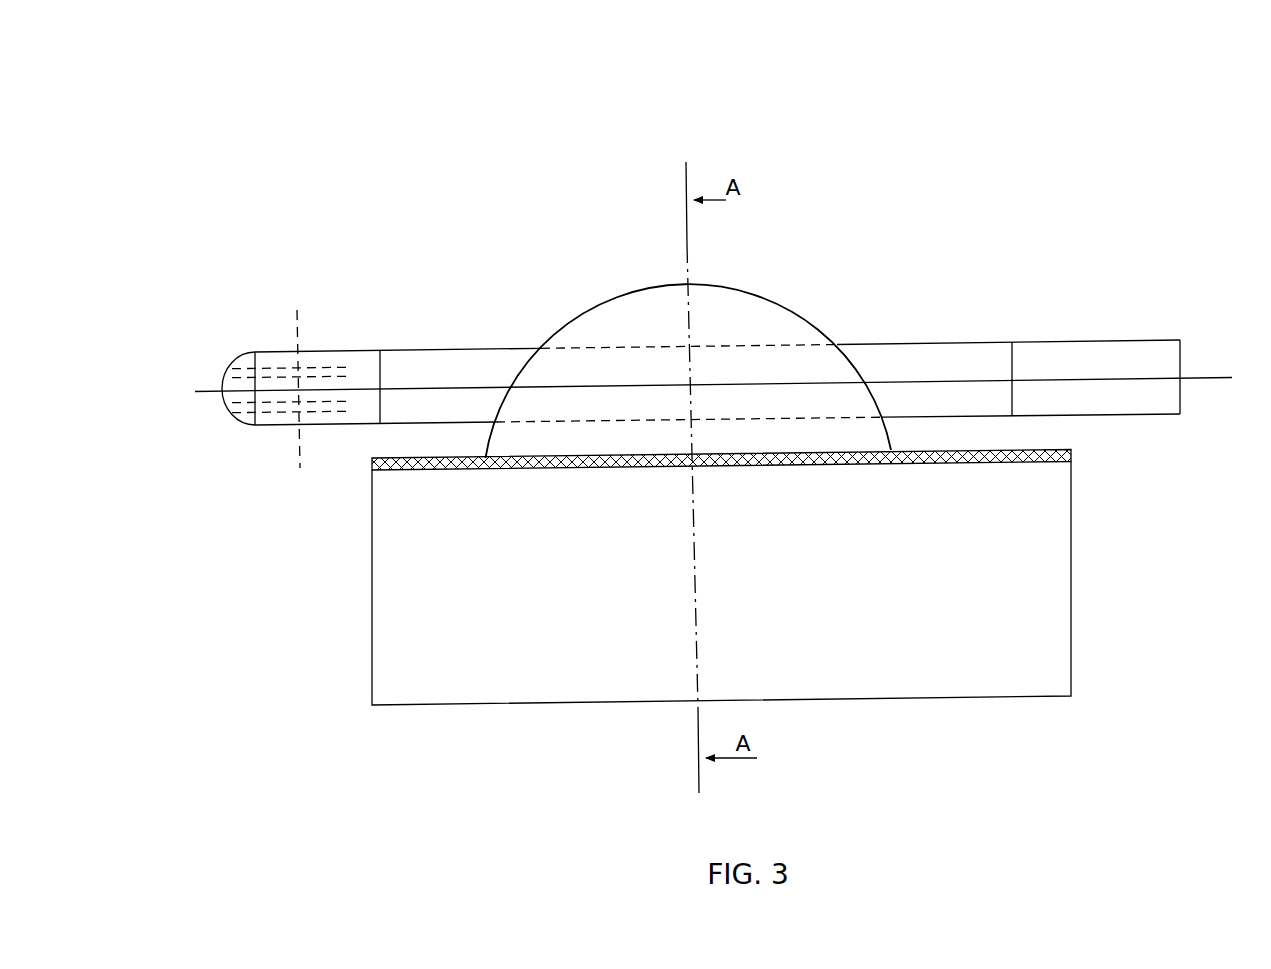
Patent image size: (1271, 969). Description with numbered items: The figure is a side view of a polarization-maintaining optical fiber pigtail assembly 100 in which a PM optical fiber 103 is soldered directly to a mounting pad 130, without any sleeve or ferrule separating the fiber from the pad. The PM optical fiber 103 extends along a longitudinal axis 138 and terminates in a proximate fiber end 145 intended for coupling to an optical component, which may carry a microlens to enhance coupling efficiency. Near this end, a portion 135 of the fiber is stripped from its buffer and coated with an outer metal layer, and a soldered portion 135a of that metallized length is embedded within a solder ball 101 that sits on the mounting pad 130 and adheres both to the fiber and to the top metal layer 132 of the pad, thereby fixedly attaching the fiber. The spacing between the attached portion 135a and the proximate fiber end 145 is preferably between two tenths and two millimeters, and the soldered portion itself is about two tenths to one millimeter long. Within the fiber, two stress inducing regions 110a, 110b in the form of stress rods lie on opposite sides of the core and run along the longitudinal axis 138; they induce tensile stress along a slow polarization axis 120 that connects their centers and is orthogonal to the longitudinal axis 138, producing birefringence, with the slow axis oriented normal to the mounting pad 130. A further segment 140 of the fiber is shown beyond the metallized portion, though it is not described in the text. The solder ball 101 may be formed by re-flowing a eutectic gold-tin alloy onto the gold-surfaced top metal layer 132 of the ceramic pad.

The PM optical fiber pigtail assembly 100 is at (852, 72).
The solder ball 101 is at (758, 293).
The PM optical fiber 103 is at (410, 330).
The stress inducing region 110a is at (322, 368).
The stress inducing region 110b is at (278, 413).
The slow polarization axis 120 is at (298, 320).
The mounting pad 130 is at (372, 582).
The top metal layer 132 is at (1073, 455).
The metallized portion 135 is at (476, 350).
The soldered portion 135a is at (672, 345).
The longitudinal axis 138 is at (1230, 376).
The connector segment 140 is at (1062, 340).
The proximate fiber end 145 is at (243, 358).